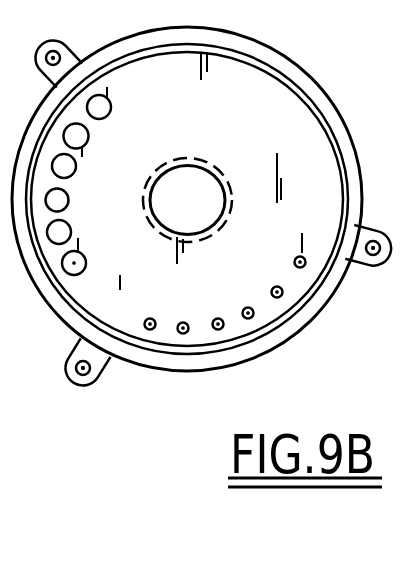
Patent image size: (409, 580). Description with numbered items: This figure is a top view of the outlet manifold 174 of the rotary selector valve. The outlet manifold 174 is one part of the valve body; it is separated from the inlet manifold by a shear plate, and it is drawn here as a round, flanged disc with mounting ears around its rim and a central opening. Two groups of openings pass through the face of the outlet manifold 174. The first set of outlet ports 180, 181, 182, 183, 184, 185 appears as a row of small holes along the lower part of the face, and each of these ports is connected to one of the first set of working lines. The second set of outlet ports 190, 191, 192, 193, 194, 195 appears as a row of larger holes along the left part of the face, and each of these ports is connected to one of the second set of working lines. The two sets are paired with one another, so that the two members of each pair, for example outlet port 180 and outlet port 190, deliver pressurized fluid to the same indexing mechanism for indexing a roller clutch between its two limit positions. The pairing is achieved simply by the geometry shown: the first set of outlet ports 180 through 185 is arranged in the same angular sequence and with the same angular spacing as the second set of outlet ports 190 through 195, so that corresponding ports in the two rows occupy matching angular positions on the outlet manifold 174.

The outlet manifold 174 is at (291, 55).
The outlet port 180 is at (293, 261).
The outlet port 181 is at (283, 291).
The outlet port 182 is at (248, 307).
The outlet port 183 is at (221, 329).
The outlet port 184 is at (183, 334).
The outlet port 185 is at (145, 320).
The outlet port 190 is at (86, 263).
The outlet port 191 is at (71, 232).
The outlet port 192 is at (68, 200).
The outlet port 193 is at (76, 166).
The outlet port 194 is at (88, 136).
The outlet port 195 is at (111, 107).